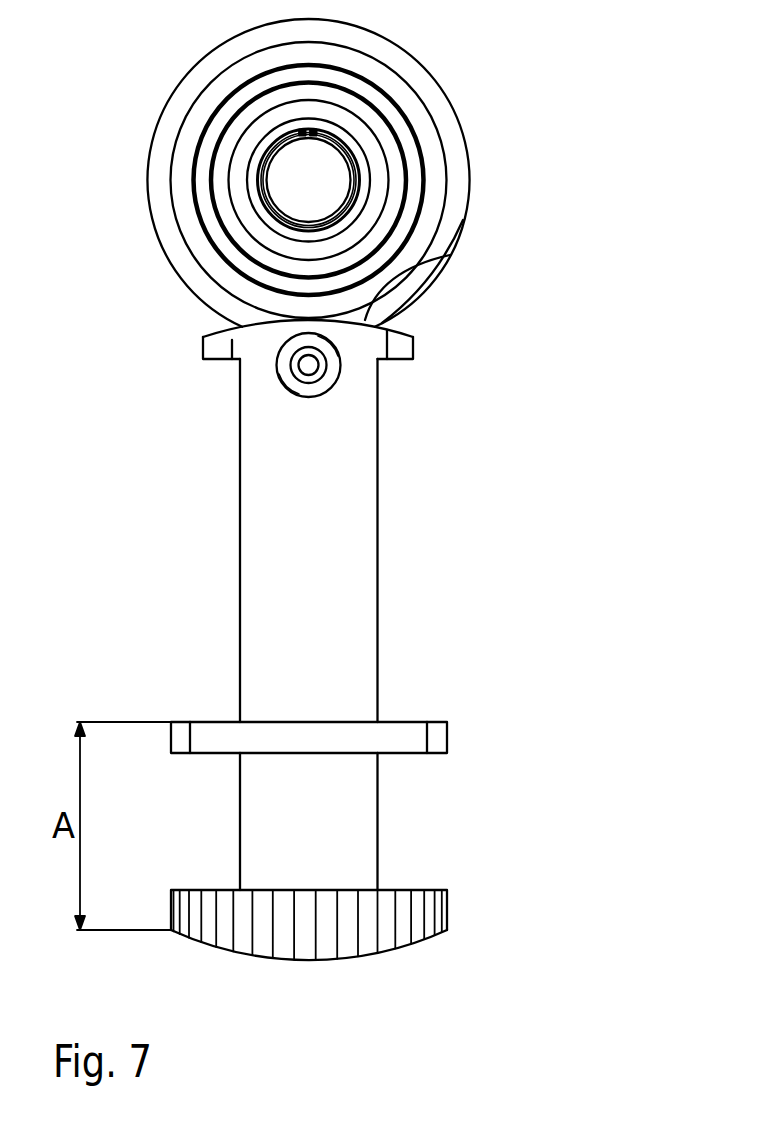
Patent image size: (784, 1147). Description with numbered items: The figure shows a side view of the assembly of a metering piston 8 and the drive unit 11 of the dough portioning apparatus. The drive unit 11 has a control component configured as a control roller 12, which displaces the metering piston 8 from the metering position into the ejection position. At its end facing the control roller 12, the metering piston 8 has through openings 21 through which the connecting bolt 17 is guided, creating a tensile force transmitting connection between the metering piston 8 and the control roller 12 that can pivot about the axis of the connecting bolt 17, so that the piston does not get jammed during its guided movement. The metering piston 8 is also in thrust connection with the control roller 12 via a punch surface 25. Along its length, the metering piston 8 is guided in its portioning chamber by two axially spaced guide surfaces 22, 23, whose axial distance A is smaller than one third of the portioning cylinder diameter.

The drive unit 11 is at (497, 83).
The control roller 12 is at (447, 180).
The punch surface 25 is at (448, 255).
The through openings 21 is at (336, 357).
The connecting bolt 17 is at (308, 365).
The metering piston 8 is at (378, 580).
The guide surface 23 is at (437, 740).
The guide surface 22 is at (428, 912).